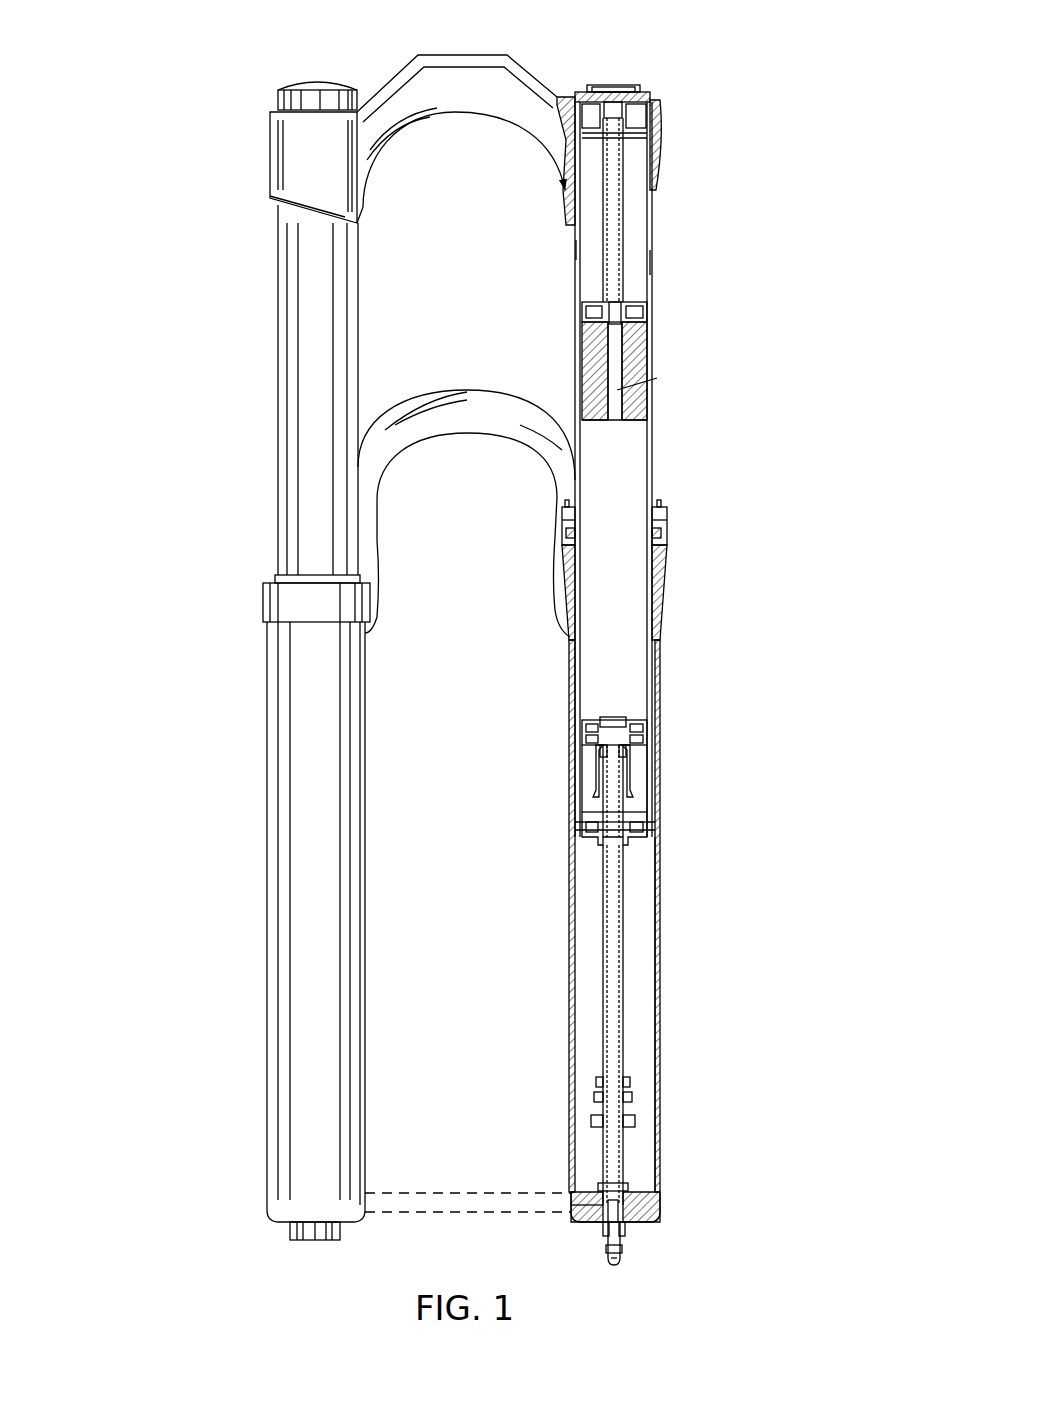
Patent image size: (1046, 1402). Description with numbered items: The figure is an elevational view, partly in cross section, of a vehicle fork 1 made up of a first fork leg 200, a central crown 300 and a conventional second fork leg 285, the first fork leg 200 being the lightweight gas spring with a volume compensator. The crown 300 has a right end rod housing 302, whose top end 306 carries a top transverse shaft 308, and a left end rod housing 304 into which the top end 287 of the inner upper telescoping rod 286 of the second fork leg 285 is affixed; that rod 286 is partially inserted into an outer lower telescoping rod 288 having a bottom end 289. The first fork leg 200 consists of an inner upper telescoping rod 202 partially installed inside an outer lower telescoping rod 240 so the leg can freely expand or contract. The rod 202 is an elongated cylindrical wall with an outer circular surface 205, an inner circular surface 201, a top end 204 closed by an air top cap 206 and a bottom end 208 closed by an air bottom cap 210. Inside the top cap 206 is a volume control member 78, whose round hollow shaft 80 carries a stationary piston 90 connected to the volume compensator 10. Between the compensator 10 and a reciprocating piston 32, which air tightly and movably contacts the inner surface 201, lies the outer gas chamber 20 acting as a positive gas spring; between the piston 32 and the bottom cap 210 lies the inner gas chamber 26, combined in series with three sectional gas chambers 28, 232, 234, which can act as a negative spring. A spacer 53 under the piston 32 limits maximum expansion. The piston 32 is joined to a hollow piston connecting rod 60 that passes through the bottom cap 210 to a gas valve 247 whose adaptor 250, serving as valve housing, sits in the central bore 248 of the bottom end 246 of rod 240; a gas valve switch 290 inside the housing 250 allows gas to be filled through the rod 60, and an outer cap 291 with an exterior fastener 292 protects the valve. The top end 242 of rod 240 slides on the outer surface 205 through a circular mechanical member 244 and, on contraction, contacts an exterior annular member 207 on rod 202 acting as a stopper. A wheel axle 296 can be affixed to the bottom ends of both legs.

The vehicle fork 1 is at (140, 135).
The second fork leg 285 is at (170, 548).
The top end 287 is at (297, 99).
The left end rod housing 304 is at (285, 170).
The inner upper telescoping rod 286 is at (300, 396).
The outer lower telescoping rod 288 is at (285, 900).
The bottom end 289 is at (283, 1205).
The wheel axle 296 is at (472, 1202).
The crown 300 is at (488, 72).
The top end 306 is at (565, 118).
The first fork leg 200 is at (752, 540).
The inner circular surface 201 is at (580, 280).
The outer circular surface 205 is at (577, 248).
The inner upper telescoping rod 202 is at (652, 268).
The right end rod housing 302 is at (655, 96).
The air top cap 206 is at (612, 78).
The top transverse shaft 308 is at (636, 95).
The top end 204 is at (652, 150).
The volume control member 78 is at (626, 186).
The round hollow shaft 80 is at (622, 228).
The stationary piston 90 is at (632, 298).
The volume compensator 10 is at (603, 432).
The outer gas chamber 20 is at (622, 577).
The exterior annular member 207 is at (663, 507).
The top end 242 is at (668, 525).
The circular mechanical member 244 is at (660, 575).
The outer lower telescoping rod 240 is at (663, 930).
The reciprocating piston 32 is at (602, 714).
The spacer 53 is at (600, 753).
The inner gas chamber 26 is at (637, 770).
The sectional gas chamber 28 is at (596, 784).
The bottom end 208 is at (653, 806).
The sectional gas chamber 232 is at (586, 815).
The sectional gas chamber 234 is at (576, 832).
The air bottom cap 210 is at (588, 848).
The piston connecting rod 60 is at (632, 990).
The central bore 248 is at (640, 1218).
The bottom end 246 is at (585, 1208).
The gas valve 247 is at (648, 1230).
The exterior fastener 292 is at (606, 1238).
The gas valve switch 290 is at (607, 1265).
The adaptor 250 is at (628, 1255).
The outer cap 291 is at (618, 1270).